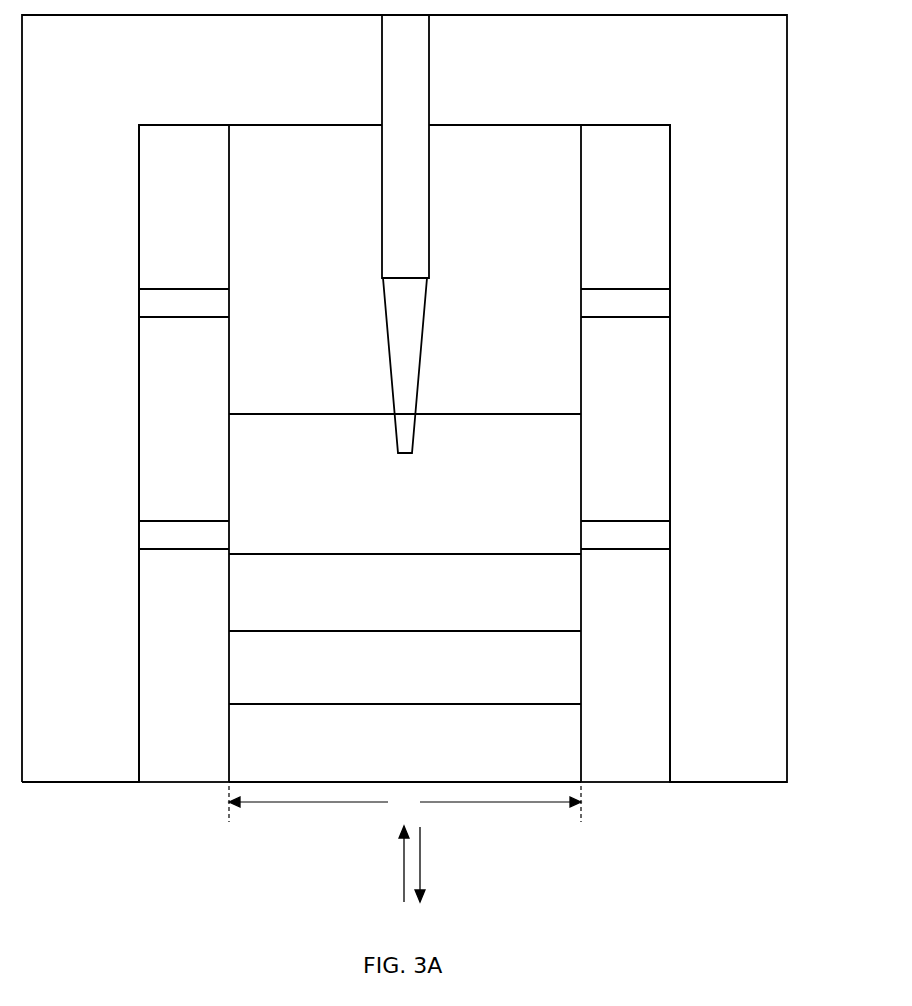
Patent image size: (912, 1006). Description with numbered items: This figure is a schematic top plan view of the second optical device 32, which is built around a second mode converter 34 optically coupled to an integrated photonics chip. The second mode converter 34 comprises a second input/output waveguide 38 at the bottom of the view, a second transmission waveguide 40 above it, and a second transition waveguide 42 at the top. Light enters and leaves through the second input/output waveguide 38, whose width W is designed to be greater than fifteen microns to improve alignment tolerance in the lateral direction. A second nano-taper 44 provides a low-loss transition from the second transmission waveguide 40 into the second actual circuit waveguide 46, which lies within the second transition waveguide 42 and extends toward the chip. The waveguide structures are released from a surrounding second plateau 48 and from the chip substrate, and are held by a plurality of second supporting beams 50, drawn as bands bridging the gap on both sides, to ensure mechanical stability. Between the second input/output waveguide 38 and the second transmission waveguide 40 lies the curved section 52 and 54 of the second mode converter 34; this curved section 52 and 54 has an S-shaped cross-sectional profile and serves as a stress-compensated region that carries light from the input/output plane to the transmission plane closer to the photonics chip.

The second optical device 32 is at (833, 362).
The second mode converter 34 is at (490, 832).
The second input/output waveguide 38 is at (568, 766).
The second transmission waveguide 40 is at (562, 441).
The second transition waveguide 42 is at (563, 255).
The second nano-taper 44 is at (408, 329).
The second actual circuit waveguide 46 is at (415, 241).
The second plateau 48 is at (121, 196).
The second supporting beams 50 is at (180, 303).
The curved section 52 is at (560, 681).
The curved section 54 is at (562, 602).